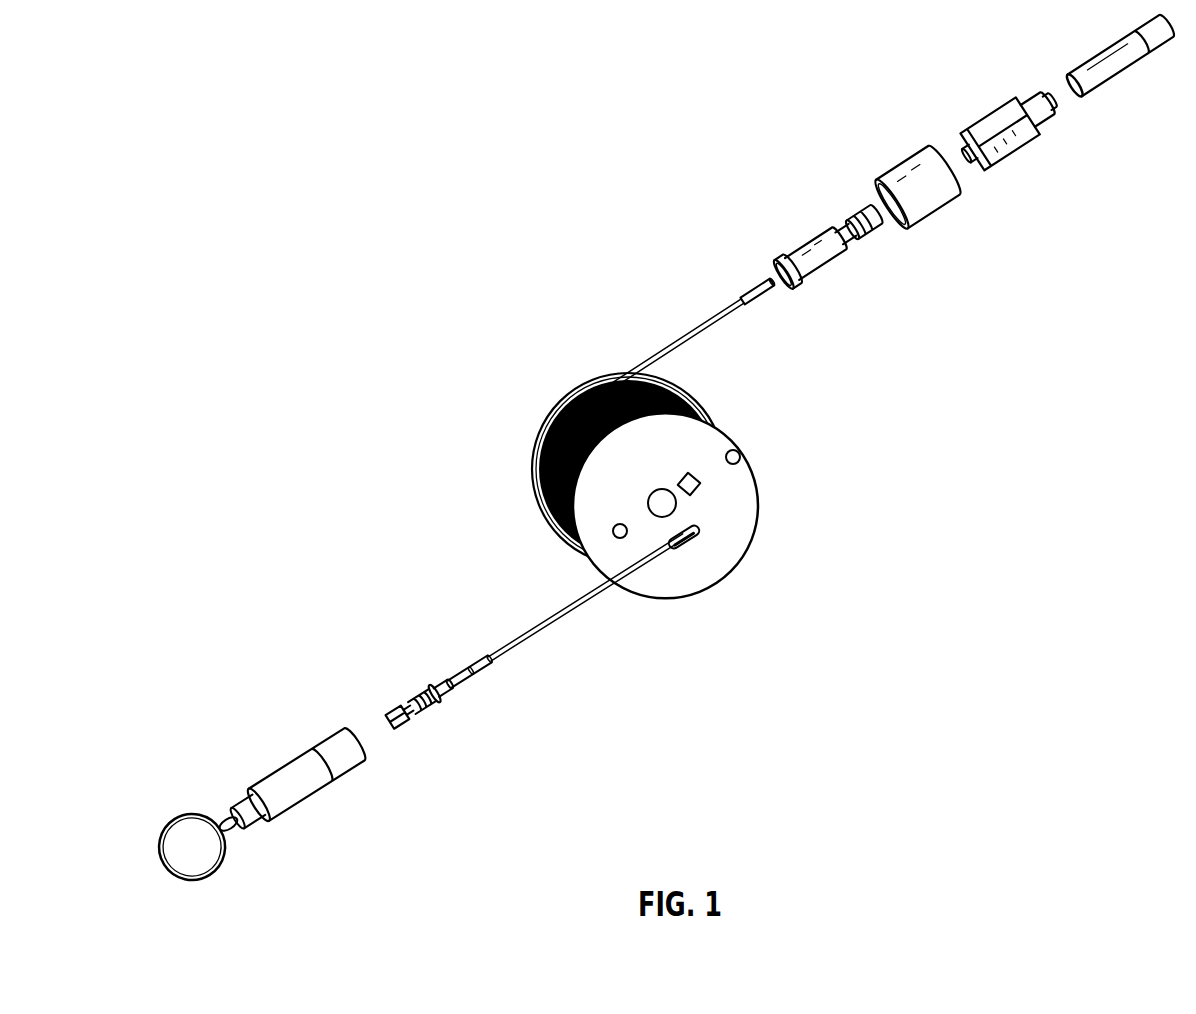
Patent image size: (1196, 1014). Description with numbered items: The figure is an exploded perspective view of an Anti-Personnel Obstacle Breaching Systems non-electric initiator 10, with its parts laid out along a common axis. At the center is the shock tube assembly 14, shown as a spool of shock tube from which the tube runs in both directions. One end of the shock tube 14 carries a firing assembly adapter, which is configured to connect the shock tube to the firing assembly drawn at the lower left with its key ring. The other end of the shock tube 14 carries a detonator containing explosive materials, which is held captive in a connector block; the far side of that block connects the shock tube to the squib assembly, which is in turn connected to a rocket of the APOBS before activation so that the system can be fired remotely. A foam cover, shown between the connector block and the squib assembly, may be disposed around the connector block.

The non-electric initiator 10 is at (445, 147).
The shock tube assembly 14 is at (566, 401).